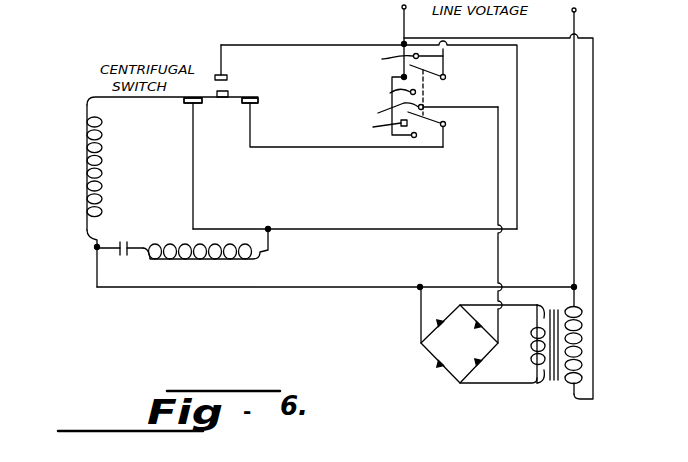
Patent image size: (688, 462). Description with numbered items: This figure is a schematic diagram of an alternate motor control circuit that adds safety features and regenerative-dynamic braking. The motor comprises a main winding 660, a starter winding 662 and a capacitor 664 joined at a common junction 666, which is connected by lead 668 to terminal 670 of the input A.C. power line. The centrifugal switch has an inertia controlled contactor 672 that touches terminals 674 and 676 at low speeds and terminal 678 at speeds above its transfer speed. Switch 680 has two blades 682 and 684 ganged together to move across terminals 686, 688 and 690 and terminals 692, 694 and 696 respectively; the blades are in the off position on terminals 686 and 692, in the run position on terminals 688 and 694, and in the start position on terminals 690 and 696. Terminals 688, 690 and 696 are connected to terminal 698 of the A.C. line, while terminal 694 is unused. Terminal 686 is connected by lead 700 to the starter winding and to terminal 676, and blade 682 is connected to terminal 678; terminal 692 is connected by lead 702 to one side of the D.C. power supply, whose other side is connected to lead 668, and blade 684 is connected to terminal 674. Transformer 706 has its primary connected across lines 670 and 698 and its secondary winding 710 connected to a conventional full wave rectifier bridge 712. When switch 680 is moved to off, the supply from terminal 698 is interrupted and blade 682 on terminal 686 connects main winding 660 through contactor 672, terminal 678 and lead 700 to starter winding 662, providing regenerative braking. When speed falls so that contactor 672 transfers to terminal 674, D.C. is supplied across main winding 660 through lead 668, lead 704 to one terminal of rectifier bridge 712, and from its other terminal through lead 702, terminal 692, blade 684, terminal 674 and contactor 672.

The main winding 660 is at (85, 170).
The starter winding 662 is at (182, 228).
The capacitor 664 is at (123, 240).
The common junction 666 is at (96, 249).
The lead 668 is at (313, 292).
The terminal of the input A.C. power line 670 is at (577, 21).
The inertia controlled contactor 672 is at (242, 93).
The centrifugal switch terminal 674 is at (258, 104).
The centrifugal switch terminal 676 is at (188, 106).
The centrifugal switch terminal 678 is at (216, 73).
The switch 680 is at (450, 101).
The switch blade 682 is at (443, 64).
The switch blade 684 is at (445, 122).
The switch terminal 686 is at (396, 60).
The switch terminal 688 is at (400, 76).
The switch terminal 690 is at (384, 95).
The switch terminal 692 is at (386, 112).
The switch terminal 694 is at (375, 128).
The switch terminal 696 is at (414, 138).
The terminal of the input A.C. power line 698 is at (403, 23).
The lead 700 is at (350, 228).
The lead 702 is at (496, 198).
The lead 704 is at (418, 307).
The transformer 706 is at (553, 388).
The secondary winding 710 is at (531, 349).
The full wave rectifier bridge 712 is at (427, 354).